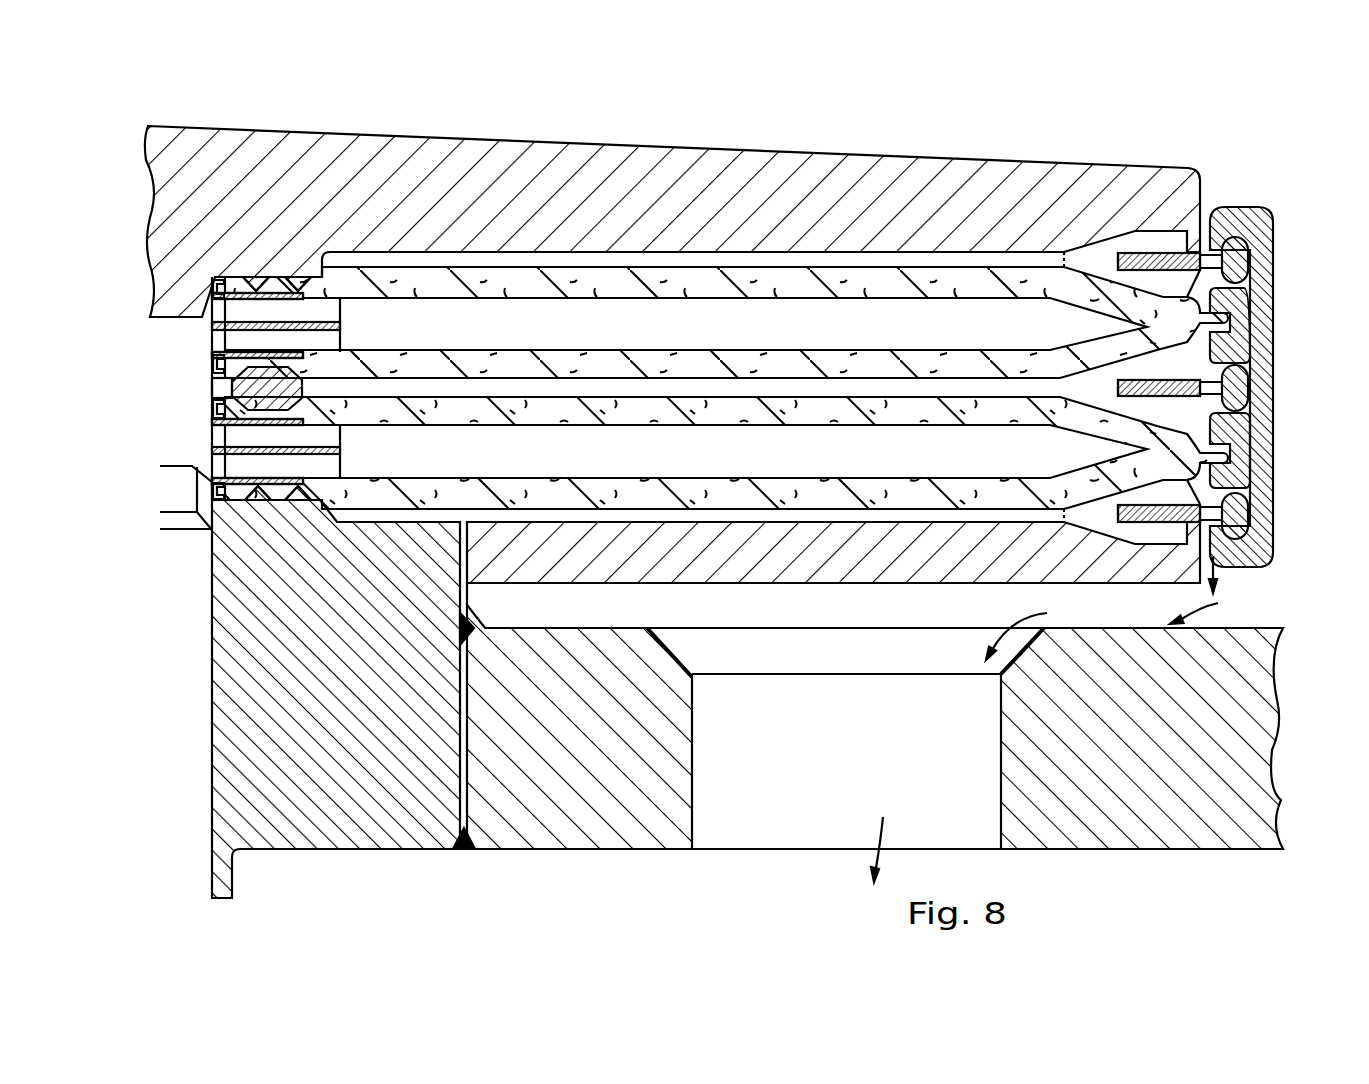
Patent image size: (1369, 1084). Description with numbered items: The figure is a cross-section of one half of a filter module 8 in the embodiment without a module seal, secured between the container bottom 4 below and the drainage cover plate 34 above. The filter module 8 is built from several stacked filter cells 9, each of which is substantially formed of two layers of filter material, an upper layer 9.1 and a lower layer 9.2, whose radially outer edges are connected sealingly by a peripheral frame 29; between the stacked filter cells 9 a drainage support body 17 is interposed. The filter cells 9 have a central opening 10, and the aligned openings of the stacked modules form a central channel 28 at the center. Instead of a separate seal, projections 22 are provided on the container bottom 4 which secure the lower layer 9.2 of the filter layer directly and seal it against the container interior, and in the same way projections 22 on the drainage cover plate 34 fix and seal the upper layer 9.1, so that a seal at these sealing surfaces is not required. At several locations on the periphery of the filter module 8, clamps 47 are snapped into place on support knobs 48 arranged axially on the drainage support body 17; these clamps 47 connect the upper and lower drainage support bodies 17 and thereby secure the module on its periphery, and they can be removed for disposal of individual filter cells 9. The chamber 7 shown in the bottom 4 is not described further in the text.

The bottom 4 is at (558, 825).
The chamber 7 is at (932, 761).
The filter module 8 is at (1086, 132).
The filter cells 9 is at (766, 262).
The upper layer 9.1 is at (401, 293).
The lower layer 9.2 is at (618, 352).
The central opening 10 is at (160, 602).
The drainage support body 17 is at (957, 262).
The projections 22 is at (255, 278).
The central channel 28 is at (60, 641).
The peripheral frame 29 is at (1238, 303).
The drainage cover plate 34 is at (847, 188).
The clamps 47 is at (1257, 230).
The support knobs 48 is at (1243, 270).